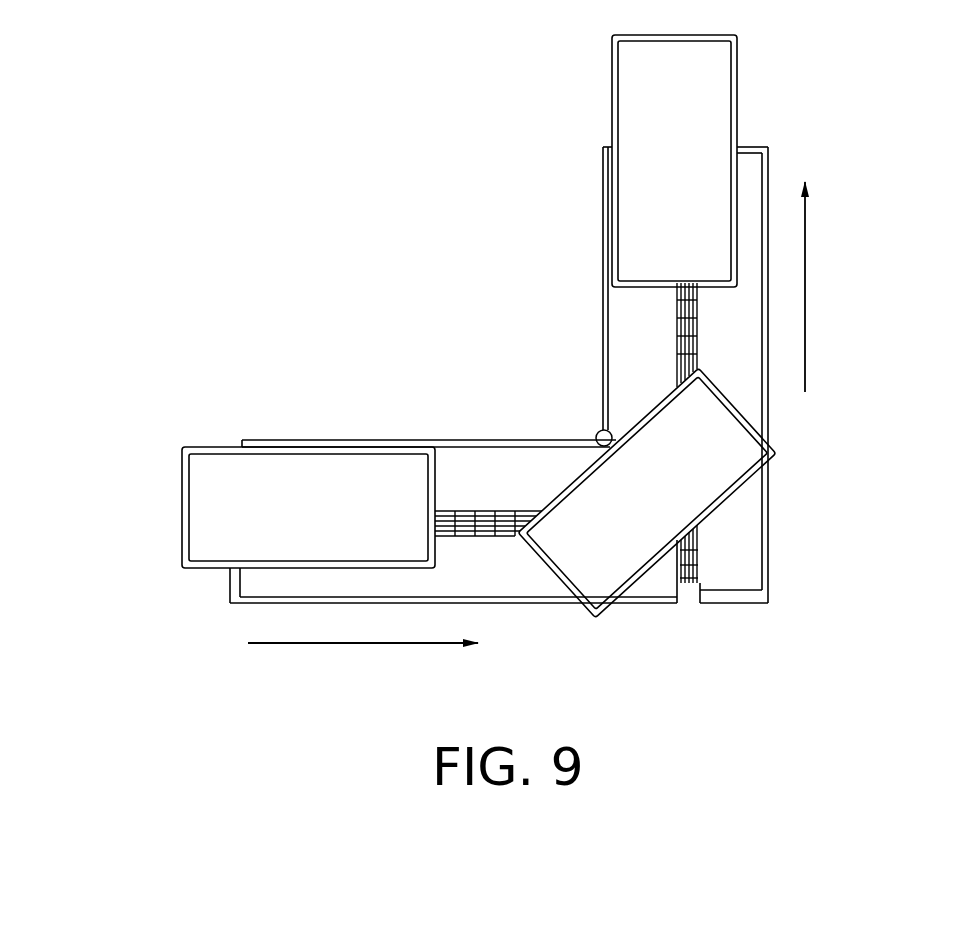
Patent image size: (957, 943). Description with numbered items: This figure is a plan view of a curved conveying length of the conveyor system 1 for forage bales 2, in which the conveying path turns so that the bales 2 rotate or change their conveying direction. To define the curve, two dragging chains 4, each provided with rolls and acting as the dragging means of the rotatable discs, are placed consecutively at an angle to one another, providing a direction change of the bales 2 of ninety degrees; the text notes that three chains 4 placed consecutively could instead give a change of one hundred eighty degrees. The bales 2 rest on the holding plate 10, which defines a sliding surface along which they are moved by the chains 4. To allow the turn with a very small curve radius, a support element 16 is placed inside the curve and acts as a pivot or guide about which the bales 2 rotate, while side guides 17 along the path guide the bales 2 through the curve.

The conveyor system 1 is at (292, 262).
The forage bale 2 is at (683, 143).
The dragging chain 4 is at (705, 335).
The holding plate 10 is at (750, 205).
The support element 16 is at (598, 430).
The side guide 17 is at (603, 268).